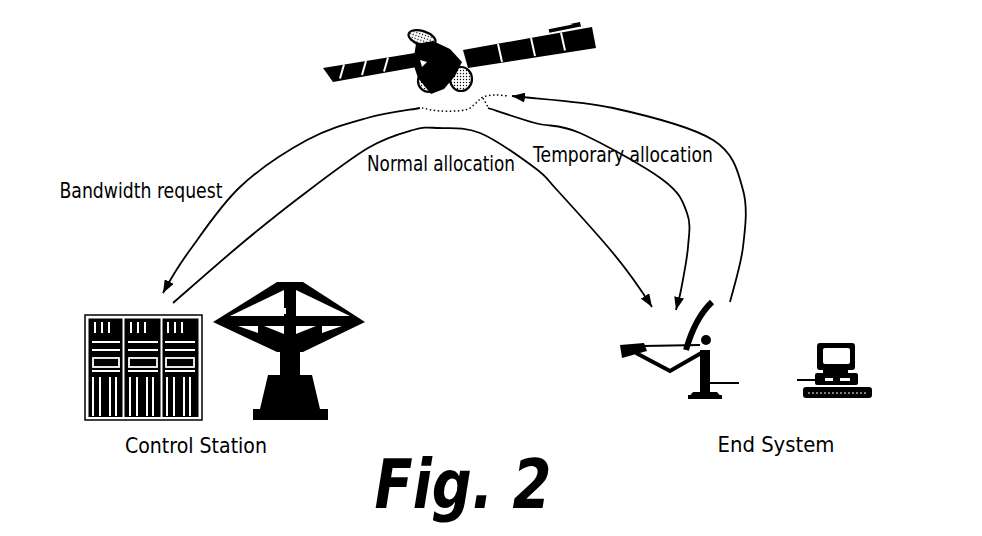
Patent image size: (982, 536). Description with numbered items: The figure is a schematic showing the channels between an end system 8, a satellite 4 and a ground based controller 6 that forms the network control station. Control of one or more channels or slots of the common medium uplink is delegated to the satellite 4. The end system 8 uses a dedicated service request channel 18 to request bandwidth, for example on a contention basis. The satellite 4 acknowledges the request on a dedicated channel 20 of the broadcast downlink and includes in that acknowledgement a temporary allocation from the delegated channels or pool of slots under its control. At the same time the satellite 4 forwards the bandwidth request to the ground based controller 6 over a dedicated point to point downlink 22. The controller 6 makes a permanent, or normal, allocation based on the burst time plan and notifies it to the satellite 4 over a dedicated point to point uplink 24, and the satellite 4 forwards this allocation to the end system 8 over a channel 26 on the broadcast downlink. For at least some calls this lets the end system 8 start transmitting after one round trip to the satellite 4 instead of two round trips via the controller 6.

The satellite 4 is at (412, 41).
The ground based controller 6 is at (120, 317).
The end system 8 is at (758, 360).
The dedicated service request channel 18 is at (713, 140).
The dedicated channel of broadcast downlink 20 is at (687, 212).
The dedicated point to point downlink 22 is at (265, 171).
The dedicated point to point uplink 24 is at (300, 197).
The channel on the broadcast downlink 26 is at (558, 193).